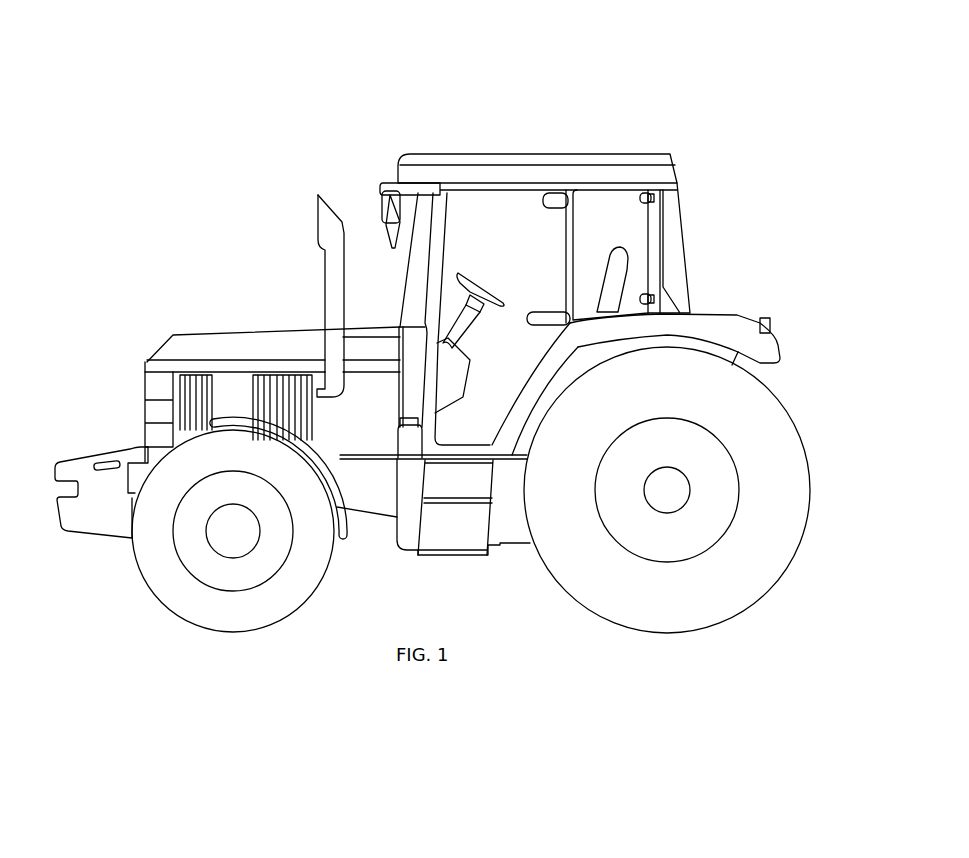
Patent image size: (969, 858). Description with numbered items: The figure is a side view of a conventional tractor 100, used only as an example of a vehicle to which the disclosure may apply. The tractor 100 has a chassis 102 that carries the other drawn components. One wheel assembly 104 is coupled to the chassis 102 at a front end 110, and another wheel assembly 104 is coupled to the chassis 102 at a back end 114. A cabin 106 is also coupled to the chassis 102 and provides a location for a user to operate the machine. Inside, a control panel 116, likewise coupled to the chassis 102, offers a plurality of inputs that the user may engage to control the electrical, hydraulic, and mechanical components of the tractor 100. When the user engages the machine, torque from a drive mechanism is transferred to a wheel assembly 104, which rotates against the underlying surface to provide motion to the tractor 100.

The tractor 100 is at (207, 230).
The chassis 102 is at (386, 501).
The wheel assembly 104 is at (203, 643).
The cabin 106 is at (703, 258).
The front end 110 is at (83, 349).
The back end 114 is at (817, 293).
The control panel 116 is at (512, 278).